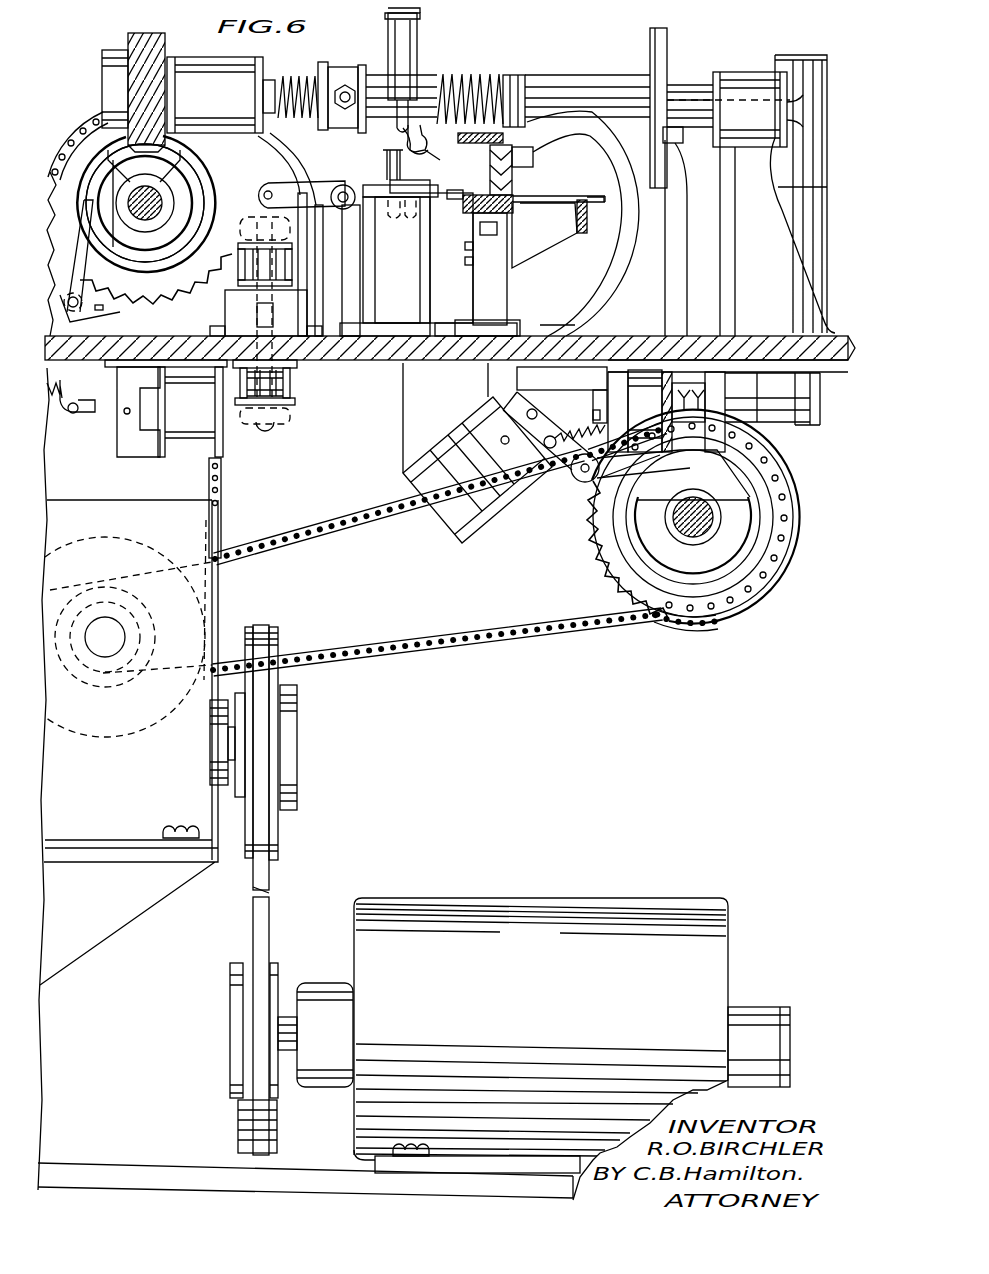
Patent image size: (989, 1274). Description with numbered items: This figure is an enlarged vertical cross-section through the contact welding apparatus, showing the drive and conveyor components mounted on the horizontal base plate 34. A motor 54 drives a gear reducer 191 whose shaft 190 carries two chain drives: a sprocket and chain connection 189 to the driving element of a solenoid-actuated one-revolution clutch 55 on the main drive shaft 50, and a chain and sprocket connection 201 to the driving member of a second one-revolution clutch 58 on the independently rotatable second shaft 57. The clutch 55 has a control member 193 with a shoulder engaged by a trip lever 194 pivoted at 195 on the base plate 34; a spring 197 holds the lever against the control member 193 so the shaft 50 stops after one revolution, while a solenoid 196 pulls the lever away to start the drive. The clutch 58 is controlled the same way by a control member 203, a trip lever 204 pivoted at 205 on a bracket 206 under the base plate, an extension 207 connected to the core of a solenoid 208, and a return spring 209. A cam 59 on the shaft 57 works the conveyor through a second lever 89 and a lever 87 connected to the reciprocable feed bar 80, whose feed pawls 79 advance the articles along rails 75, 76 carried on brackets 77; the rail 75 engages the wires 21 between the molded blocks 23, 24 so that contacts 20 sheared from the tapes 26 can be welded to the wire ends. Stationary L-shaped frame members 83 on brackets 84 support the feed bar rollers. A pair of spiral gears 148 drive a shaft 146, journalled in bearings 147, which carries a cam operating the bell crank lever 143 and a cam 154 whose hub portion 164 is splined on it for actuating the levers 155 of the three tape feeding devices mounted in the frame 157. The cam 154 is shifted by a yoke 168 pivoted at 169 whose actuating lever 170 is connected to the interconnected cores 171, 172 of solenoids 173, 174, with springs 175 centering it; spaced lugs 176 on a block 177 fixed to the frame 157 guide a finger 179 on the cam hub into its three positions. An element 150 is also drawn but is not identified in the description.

The contacts 20 is at (438, 205).
The wires 21 is at (595, 197).
The molded block 23 is at (462, 183).
The molded block 24 is at (560, 220).
The tapes 26 is at (400, 220).
The base plate 34 is at (386, 350).
The main drive shaft 50 is at (158, 201).
The motor 54 is at (528, 910).
The one-revolution clutch 55 is at (97, 167).
The second shaft 57 is at (695, 535).
The one-revolution clutch 58 is at (770, 580).
The cam 59 is at (785, 560).
The rail 75 is at (508, 208).
The rail 76 is at (585, 222).
The brackets 77 is at (495, 308).
The feed pawls 79 is at (528, 197).
The feed bar 80 is at (515, 152).
The L-shaped frame members 83 is at (490, 158).
The brackets 84 is at (688, 252).
The lever 87 is at (688, 92).
The second lever 89 is at (765, 412).
The bell crank lever 143 is at (708, 392).
The shaft 146 is at (575, 100).
The bearings 147 is at (210, 75).
The spiral gears 148 is at (170, 142).
The bracket 150 is at (387, 178).
The cam 154 is at (412, 70).
The levers 155 is at (390, 12).
The frame 157 is at (428, 294).
The hub portion 164 is at (392, 70).
The shifting yoke 168 is at (330, 148).
The pivot 169 is at (348, 205).
The actuating lever 170 is at (312, 190).
The core 171 is at (295, 255).
The core 172 is at (292, 375).
The solenoid 173 is at (292, 265).
The solenoid 174 is at (293, 392).
The springs 175 is at (296, 74).
The lugs 176 is at (430, 152).
The block 177 is at (410, 184).
The finger 179 is at (408, 118).
The sprocket and chain connection 189 is at (100, 165).
The shaft 190 is at (108, 660).
The gear reducer 191 is at (108, 505).
The control member 193 is at (95, 128).
The trip lever 194 is at (88, 258).
The pivot 195 is at (110, 312).
The solenoid 196 is at (185, 440).
The spring 197 is at (73, 414).
The chain and sprocket connection 201 is at (655, 625).
The control member 203 is at (713, 472).
The trip lever 204 is at (600, 478).
The pivot 205 is at (580, 480).
The bracket 206 is at (600, 372).
The extension 207 is at (565, 470).
The solenoid 208 is at (450, 515).
The spring 209 is at (600, 400).